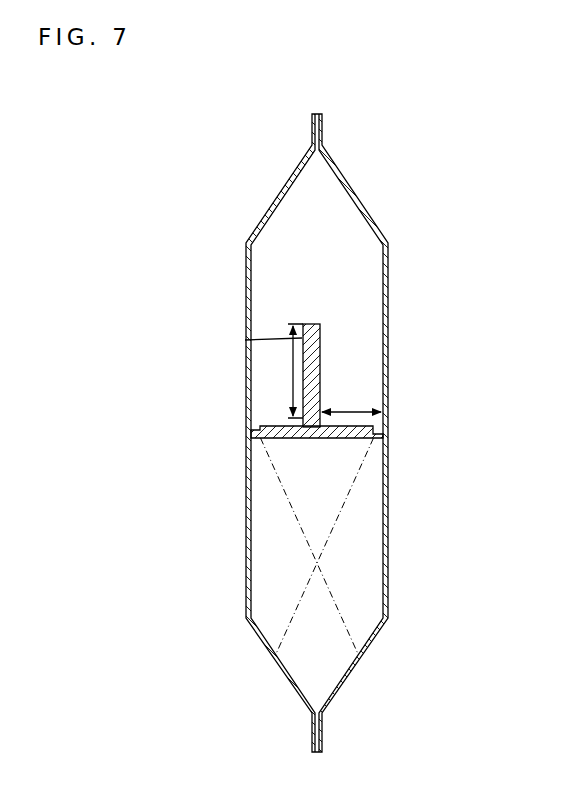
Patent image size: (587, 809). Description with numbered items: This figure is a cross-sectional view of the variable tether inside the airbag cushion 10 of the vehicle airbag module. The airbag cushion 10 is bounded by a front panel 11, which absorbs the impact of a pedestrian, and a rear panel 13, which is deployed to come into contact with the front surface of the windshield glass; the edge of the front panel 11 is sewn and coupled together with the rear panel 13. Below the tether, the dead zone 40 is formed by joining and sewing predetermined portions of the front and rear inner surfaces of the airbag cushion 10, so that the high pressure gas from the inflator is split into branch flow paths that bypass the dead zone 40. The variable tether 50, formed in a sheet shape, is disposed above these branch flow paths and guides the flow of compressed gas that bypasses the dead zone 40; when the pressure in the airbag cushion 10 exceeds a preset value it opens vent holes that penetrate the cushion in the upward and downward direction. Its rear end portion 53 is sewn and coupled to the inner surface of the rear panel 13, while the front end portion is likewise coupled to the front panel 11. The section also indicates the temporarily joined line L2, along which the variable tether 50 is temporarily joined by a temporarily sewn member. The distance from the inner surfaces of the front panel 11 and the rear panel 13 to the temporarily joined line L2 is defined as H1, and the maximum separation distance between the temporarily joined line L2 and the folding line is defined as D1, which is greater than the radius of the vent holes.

The airbag cushion 10 is at (236, 451).
The front panel 11 is at (246, 268).
The rear panel 13 is at (388, 306).
The dead zone 40 is at (317, 571).
The variable tether 50 is at (343, 347).
The rear end portion 53 is at (383, 433).
The separation distance D1 is at (280, 371).
The distance to temporarily joined line H1 is at (351, 396).
The temporarily joined line L2 is at (245, 340).